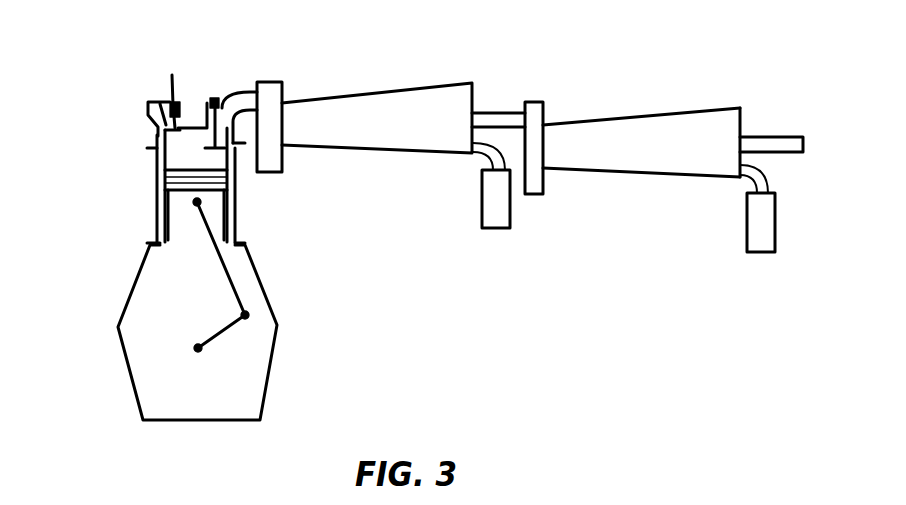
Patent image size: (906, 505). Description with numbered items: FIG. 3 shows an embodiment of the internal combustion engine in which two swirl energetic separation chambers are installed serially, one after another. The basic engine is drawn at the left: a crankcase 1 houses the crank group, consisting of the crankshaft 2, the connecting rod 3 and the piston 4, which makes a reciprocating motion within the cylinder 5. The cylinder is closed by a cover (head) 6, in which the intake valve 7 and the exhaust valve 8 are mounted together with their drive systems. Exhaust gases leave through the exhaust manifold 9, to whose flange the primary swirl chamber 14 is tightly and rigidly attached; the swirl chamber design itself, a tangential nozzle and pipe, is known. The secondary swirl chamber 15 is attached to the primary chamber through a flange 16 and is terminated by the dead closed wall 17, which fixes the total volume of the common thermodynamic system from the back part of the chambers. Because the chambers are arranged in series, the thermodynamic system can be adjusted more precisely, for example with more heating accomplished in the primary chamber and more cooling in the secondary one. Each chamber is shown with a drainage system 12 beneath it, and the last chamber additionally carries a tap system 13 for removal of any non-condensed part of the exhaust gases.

The crankcase 1 is at (123, 305).
The crankshaft 2 is at (193, 345).
The connecting rod 3 is at (233, 280).
The piston 4 is at (178, 225).
The cylinder 5 is at (163, 187).
The cover (head) 6 is at (158, 133).
The intake valve 7 is at (170, 98).
The exhaust valve 8 is at (215, 103).
The exhaust manifold 9 is at (237, 100).
The drainage system 12 is at (492, 207).
The tap system 13 is at (775, 142).
The primary swirl chamber 14 is at (328, 133).
The secondary swirl chamber 15 is at (592, 155).
The flange 16 is at (508, 118).
The dead closed wall 17 is at (743, 110).